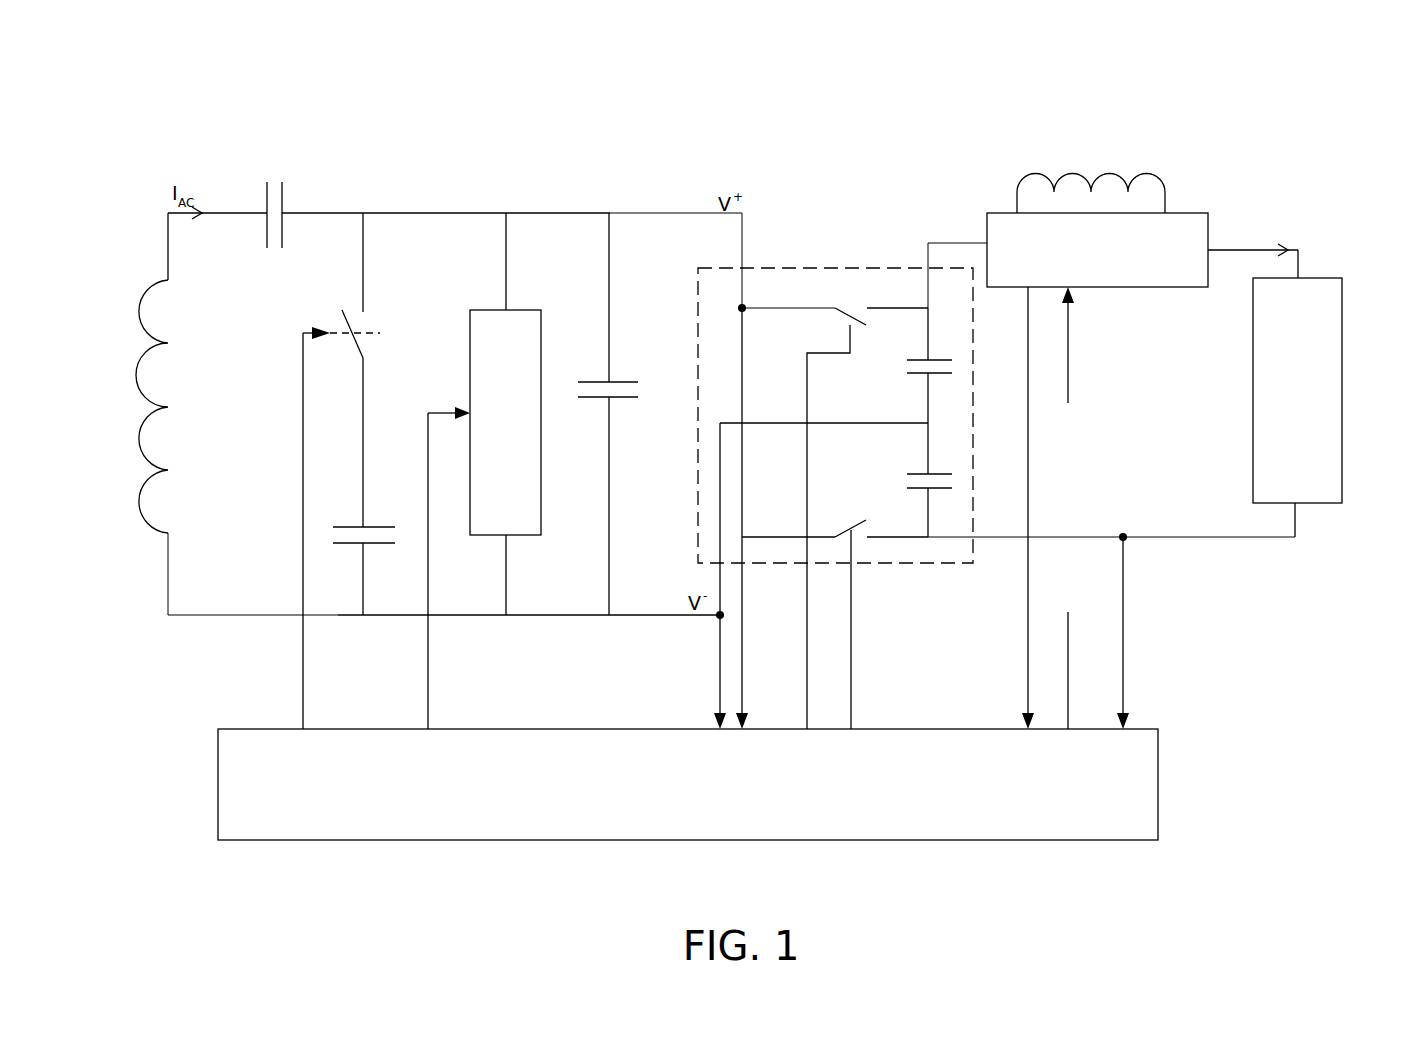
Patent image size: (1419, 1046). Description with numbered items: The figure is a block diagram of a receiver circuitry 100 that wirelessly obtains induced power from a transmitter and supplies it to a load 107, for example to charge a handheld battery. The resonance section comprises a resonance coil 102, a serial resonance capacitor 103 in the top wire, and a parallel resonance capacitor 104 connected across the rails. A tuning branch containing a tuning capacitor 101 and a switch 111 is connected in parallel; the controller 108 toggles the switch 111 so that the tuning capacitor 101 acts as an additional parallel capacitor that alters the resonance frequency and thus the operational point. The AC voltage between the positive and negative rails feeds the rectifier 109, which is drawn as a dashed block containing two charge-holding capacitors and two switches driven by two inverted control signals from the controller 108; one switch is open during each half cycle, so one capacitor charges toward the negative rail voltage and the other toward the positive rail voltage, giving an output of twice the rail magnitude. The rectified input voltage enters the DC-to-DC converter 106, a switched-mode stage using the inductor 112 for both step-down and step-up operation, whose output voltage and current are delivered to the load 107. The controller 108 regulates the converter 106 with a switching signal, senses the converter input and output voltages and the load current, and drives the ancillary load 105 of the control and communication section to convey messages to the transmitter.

The receiver circuitry 100 is at (1310, 130).
The tuning capacitor 101 is at (366, 525).
The resonance coil 102 is at (170, 344).
The serial resonance capacitor 103 is at (283, 202).
The parallel resonance capacitor 104 is at (610, 445).
The ancillary load 105 is at (542, 342).
The DC-to-DC converter 106 is at (1157, 288).
The load 107 is at (1343, 413).
The controller 108 is at (1158, 790).
The rectifier 109 is at (847, 268).
The switch 111 is at (366, 332).
The inductor 112 is at (1017, 187).